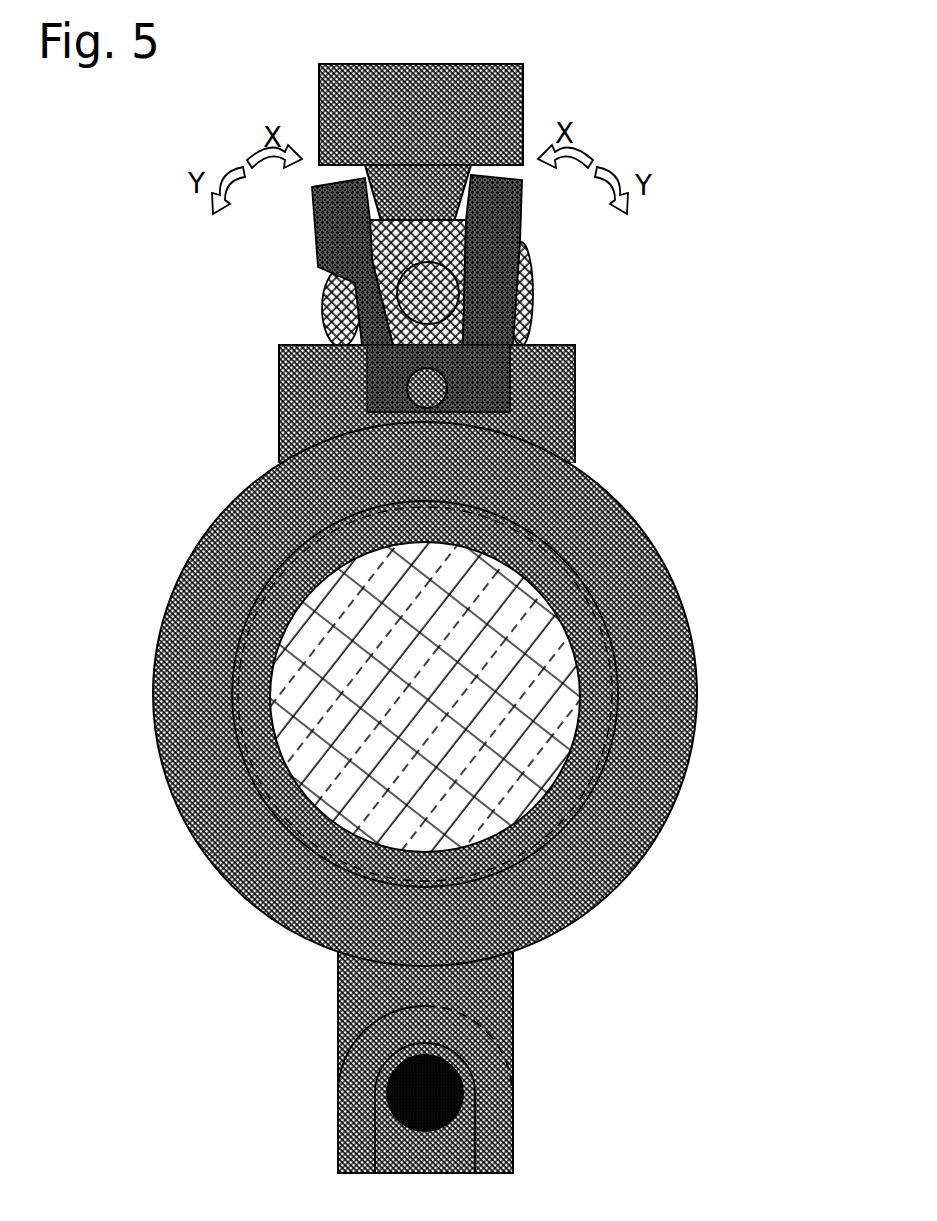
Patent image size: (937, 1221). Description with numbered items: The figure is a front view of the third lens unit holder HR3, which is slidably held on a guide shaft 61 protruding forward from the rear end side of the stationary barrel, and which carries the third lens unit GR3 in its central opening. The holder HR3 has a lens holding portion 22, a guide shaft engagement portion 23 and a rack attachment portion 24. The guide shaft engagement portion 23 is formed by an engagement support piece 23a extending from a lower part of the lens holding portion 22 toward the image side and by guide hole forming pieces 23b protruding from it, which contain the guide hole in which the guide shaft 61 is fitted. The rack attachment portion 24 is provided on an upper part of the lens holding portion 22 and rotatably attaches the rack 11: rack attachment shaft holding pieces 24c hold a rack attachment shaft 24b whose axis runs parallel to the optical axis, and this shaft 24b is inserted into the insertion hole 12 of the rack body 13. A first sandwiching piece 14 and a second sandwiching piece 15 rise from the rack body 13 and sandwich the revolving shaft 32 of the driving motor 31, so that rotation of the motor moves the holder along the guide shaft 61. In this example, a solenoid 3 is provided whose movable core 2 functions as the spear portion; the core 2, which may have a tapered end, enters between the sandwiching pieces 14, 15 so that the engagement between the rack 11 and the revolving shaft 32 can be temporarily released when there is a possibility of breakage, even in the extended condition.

The movable core 2 is at (418, 208).
The solenoid 3 is at (304, 120).
The rack 11 is at (527, 237).
The insertion hole 12 is at (407, 386).
The rack body 13 is at (363, 383).
The first sandwiching piece 14 is at (310, 188).
The second sandwiching piece 15 is at (525, 206).
The lens holding portion 22 is at (682, 437).
The guide shaft engagement portion 23 is at (640, 975).
The engagement support piece 23a is at (513, 992).
The guide hole forming pieces 23b is at (500, 1090).
The rack attachment portion 24 is at (650, 335).
The rack attachment shaft 24b is at (450, 396).
The rack attachment shaft holding pieces 24c is at (575, 370).
The driving motor 31 is at (535, 292).
The revolving shaft 32 is at (428, 293).
The guide shaft 61 is at (425, 1093).
The guide rail GR3 is at (425, 697).
The third lens unit holder HR3 is at (706, 180).